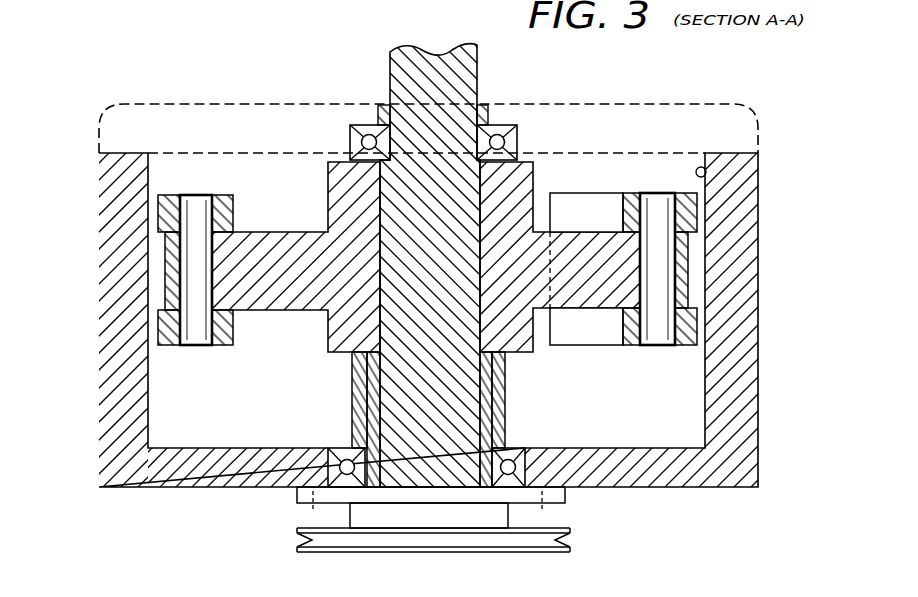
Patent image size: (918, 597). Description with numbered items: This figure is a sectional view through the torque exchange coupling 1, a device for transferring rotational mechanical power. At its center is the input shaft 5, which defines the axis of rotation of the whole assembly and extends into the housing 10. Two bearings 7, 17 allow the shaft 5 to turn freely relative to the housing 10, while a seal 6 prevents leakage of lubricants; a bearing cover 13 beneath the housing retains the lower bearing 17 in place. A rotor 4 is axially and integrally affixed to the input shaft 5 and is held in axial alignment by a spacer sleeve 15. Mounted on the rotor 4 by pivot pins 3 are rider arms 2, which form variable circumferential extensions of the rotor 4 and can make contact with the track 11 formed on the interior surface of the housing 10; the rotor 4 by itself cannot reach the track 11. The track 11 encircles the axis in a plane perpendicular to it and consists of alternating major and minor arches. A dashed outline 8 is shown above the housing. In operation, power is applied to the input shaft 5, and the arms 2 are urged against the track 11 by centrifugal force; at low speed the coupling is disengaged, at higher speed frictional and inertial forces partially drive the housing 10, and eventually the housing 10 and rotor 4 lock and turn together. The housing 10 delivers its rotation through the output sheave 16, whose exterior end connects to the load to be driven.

The torque exchange coupling 1 is at (459, 320).
The rider arm 2 is at (232, 217).
The pivot pin 3 is at (193, 197).
The rotor 4 is at (305, 256).
The input shaft 5 is at (452, 50).
The seal 6 is at (480, 108).
The bearing 7 is at (370, 133).
The cover 8 is at (722, 123).
The housing 10 is at (110, 366).
The track 11 is at (706, 161).
The bearing cover 13 is at (557, 497).
The spacer sleeve 15 is at (505, 418).
The output sheave 16 is at (310, 541).
The bearing 17 is at (347, 449).